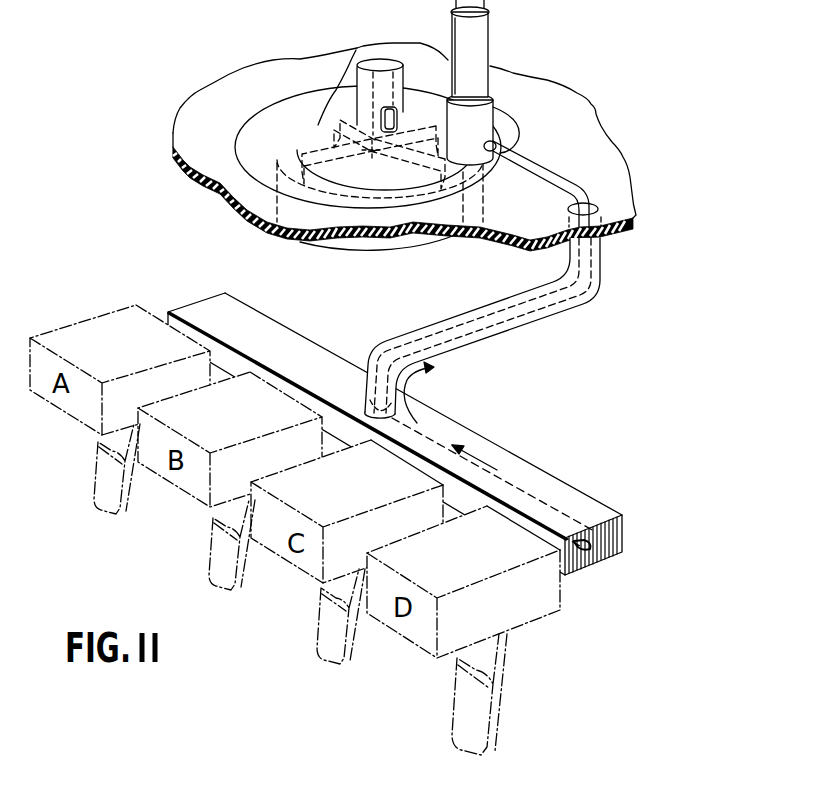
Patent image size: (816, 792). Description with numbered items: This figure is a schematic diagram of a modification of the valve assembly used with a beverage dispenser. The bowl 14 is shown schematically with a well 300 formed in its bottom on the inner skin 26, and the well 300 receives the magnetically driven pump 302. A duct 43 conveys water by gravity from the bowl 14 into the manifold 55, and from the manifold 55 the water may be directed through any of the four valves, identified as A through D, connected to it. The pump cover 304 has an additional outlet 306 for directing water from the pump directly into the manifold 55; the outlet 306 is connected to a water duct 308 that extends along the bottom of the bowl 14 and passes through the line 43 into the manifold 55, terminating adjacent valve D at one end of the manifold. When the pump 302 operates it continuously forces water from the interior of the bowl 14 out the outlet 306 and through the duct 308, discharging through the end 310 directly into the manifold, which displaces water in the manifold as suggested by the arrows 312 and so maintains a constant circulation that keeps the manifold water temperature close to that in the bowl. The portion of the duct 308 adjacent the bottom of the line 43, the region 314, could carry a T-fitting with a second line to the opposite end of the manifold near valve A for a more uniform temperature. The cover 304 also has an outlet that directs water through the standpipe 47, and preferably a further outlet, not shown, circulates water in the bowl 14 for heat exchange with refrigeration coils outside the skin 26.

The bowl 14 is at (617, 170).
The inner skin 26 is at (192, 120).
The standpipe 47 is at (482, 37).
The well 300 is at (338, 246).
The magnetically driven pump 302 is at (418, 207).
The cover 304 is at (510, 132).
The outlet 306 is at (527, 159).
The water duct 308 is at (546, 176).
The duct 43 is at (538, 319).
The region 314 is at (366, 386).
The arrows 312 is at (408, 390).
The manifold 55 is at (515, 460).
The end 310 is at (585, 540).